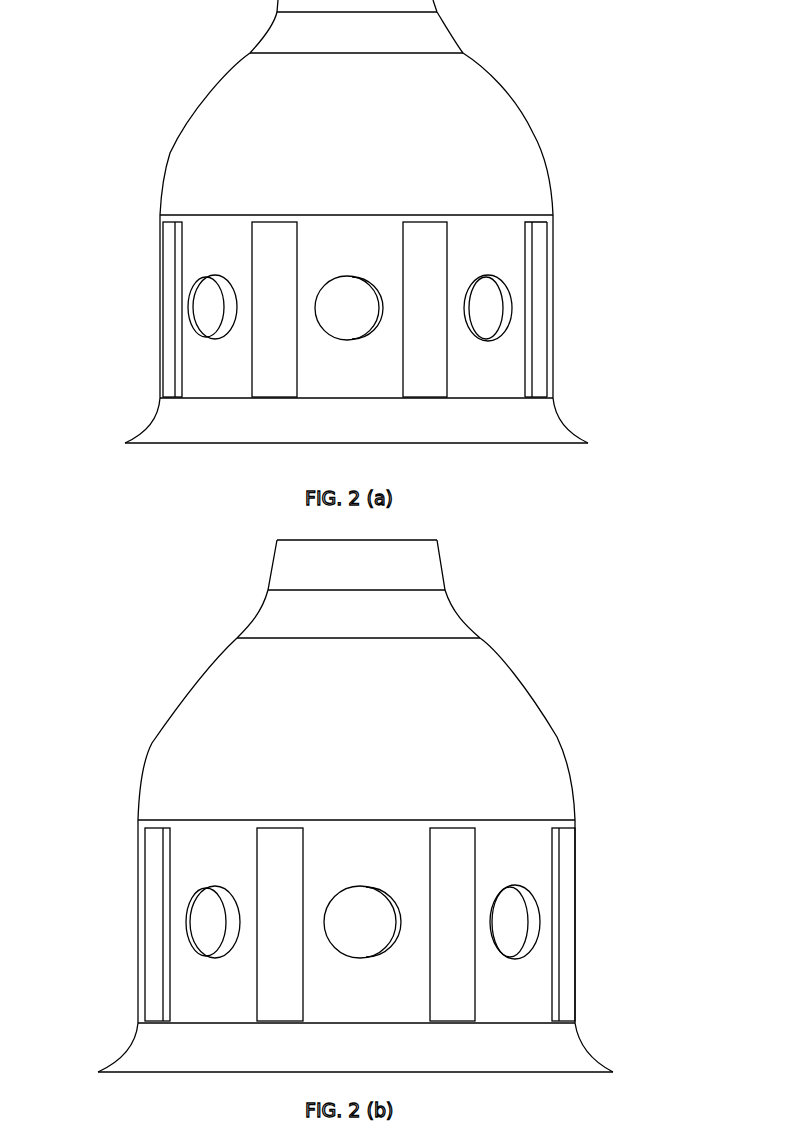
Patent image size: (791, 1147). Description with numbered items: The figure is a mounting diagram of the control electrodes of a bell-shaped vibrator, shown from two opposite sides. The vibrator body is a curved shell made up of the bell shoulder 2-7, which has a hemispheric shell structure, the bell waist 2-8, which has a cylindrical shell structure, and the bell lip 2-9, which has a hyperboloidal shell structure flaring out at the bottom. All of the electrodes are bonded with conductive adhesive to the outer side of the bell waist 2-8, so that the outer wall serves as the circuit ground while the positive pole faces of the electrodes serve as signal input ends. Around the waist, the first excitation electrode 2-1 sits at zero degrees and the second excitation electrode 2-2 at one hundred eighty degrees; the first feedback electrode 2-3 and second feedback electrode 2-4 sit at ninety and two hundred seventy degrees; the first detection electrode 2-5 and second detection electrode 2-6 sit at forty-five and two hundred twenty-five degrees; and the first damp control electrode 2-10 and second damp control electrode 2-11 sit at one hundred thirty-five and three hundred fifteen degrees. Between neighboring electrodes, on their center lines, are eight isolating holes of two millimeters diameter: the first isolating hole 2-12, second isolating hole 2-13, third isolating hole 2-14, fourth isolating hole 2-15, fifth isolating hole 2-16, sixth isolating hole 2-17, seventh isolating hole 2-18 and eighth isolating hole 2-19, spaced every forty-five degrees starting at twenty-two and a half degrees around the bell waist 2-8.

The first excitation electrode 2-1 is at (160, 312).
The second excitation electrode 2-2 is at (148, 845).
The first feedback electrode 2-3 is at (422, 352).
The second feedback electrode 2-4 is at (465, 1000).
The first detection electrode 2-5 is at (265, 385).
The second detection electrode 2-6 is at (288, 1000).
The bell shoulder 2-7 is at (527, 107).
The bell waist 2-8 is at (556, 262).
The bell lip 2-9 is at (160, 410).
The first damp control electrode 2-10 is at (537, 318).
The second damp control electrode 2-11 is at (567, 992).
The first isolating hole 2-12 is at (215, 328).
The second isolating hole 2-13 is at (342, 313).
The third isolating hole 2-14 is at (487, 300).
The fourth isolating hole 2-15 is at (553, 312).
The fifth isolating hole 2-16 is at (138, 915).
The sixth isolating hole 2-17 is at (213, 925).
The seventh isolating hole 2-18 is at (353, 912).
The eighth isolating hole 2-19 is at (513, 922).